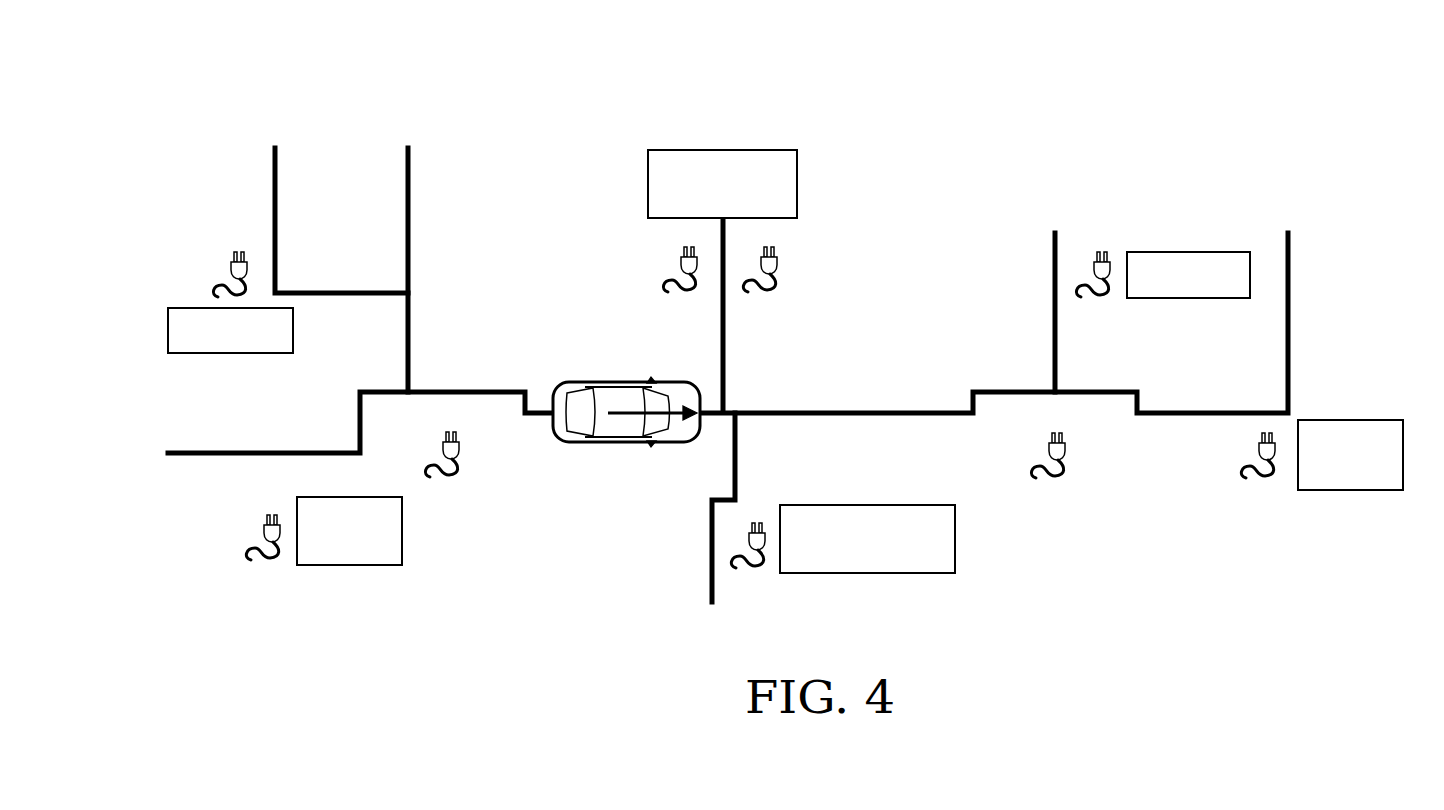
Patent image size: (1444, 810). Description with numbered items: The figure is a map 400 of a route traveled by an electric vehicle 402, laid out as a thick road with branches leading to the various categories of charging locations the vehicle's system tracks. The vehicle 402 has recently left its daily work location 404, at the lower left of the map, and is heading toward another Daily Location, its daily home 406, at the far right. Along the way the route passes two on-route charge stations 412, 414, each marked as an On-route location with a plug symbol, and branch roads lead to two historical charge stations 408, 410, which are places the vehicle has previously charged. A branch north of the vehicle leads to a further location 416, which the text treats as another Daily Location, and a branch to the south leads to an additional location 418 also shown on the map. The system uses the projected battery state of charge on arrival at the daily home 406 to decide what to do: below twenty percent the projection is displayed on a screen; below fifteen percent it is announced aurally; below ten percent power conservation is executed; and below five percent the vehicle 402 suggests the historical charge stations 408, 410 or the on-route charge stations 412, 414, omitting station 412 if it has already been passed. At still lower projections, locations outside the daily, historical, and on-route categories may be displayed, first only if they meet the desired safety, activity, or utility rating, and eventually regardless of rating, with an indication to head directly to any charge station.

The map 400 is at (768, 326).
The vehicle 402 is at (625, 383).
The daily work location 404 is at (347, 565).
The daily home 406 is at (1350, 420).
The historical charge station 408 is at (168, 330).
The historical charge station 410 is at (1188, 252).
The on-route charge station 412 is at (448, 477).
The on-route charge station 414 is at (1055, 477).
The daily home 416 is at (718, 150).
The industrial complex charging location 418 is at (862, 505).